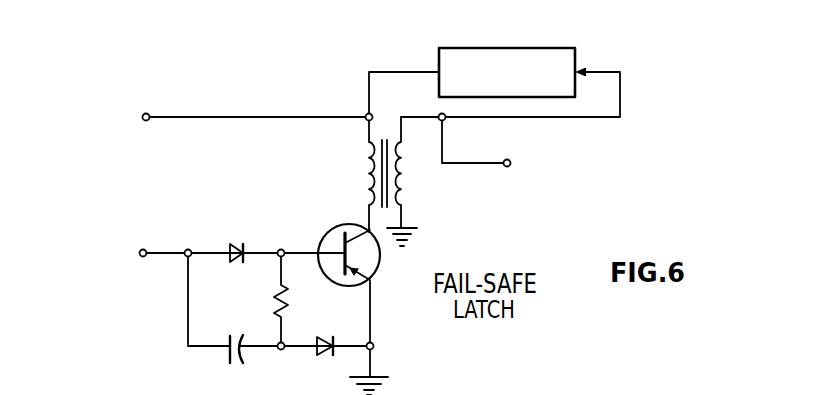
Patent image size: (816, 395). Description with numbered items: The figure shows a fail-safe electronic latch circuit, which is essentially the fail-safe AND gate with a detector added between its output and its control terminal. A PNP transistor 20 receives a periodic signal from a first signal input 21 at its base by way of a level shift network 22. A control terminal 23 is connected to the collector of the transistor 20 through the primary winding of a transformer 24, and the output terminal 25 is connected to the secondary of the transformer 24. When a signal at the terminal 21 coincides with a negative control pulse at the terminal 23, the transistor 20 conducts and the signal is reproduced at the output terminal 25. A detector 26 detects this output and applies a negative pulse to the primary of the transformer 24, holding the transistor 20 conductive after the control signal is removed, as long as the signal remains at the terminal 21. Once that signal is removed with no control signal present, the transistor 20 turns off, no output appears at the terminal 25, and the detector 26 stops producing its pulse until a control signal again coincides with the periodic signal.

The PNP transistor 20 is at (326, 236).
The first signal input 21 is at (146, 250).
The level shift network 22 is at (246, 320).
The control terminal 23 is at (149, 113).
The transformer 24 is at (349, 190).
The output terminal 25 is at (505, 167).
The detector 26 is at (511, 48).